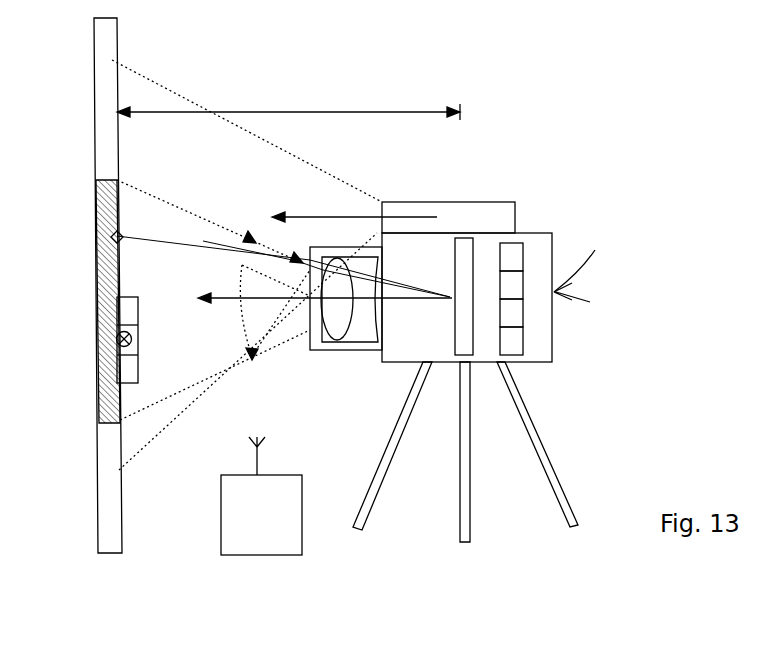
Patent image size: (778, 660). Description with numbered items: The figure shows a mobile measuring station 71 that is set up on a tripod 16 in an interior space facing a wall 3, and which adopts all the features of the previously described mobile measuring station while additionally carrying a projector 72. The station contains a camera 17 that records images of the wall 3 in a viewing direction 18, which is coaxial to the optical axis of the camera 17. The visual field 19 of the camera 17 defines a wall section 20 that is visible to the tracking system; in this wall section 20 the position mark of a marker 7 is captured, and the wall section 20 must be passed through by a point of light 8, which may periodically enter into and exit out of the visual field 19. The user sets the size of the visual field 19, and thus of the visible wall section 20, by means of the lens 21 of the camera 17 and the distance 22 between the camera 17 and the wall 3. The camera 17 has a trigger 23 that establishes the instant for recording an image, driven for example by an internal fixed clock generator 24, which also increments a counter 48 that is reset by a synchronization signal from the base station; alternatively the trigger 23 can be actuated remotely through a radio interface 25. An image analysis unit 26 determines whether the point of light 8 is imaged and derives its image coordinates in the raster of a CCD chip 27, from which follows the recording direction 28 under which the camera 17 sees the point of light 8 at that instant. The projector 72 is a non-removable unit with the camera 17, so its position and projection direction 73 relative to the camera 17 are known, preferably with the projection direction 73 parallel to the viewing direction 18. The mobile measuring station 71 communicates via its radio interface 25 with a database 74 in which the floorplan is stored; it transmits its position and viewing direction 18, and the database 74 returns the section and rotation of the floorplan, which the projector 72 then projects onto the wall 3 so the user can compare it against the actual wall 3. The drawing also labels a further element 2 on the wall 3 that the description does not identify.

The reflector target 2 is at (118, 348).
The wall 3 is at (102, 138).
The marker 7 is at (128, 313).
The point of light 8 is at (117, 237).
The tripod 16 is at (547, 465).
The camera 17 is at (487, 240).
The viewing direction 18 is at (220, 297).
The visual field 19 is at (240, 268).
The wall section 20 is at (98, 360).
The lens 21 is at (353, 262).
The distance 22 is at (347, 108).
The trigger 23 is at (510, 260).
The clock generator 24 is at (512, 315).
The radio interface 25 is at (591, 272).
The image analysis unit 26 is at (512, 287).
The CCD chip 27 is at (467, 257).
The recording direction 28 is at (270, 250).
The counter 48 is at (512, 345).
The mobile measuring station 71 is at (562, 77).
The projector 72 is at (482, 205).
The projection direction 73 is at (370, 213).
The database 74 is at (259, 530).